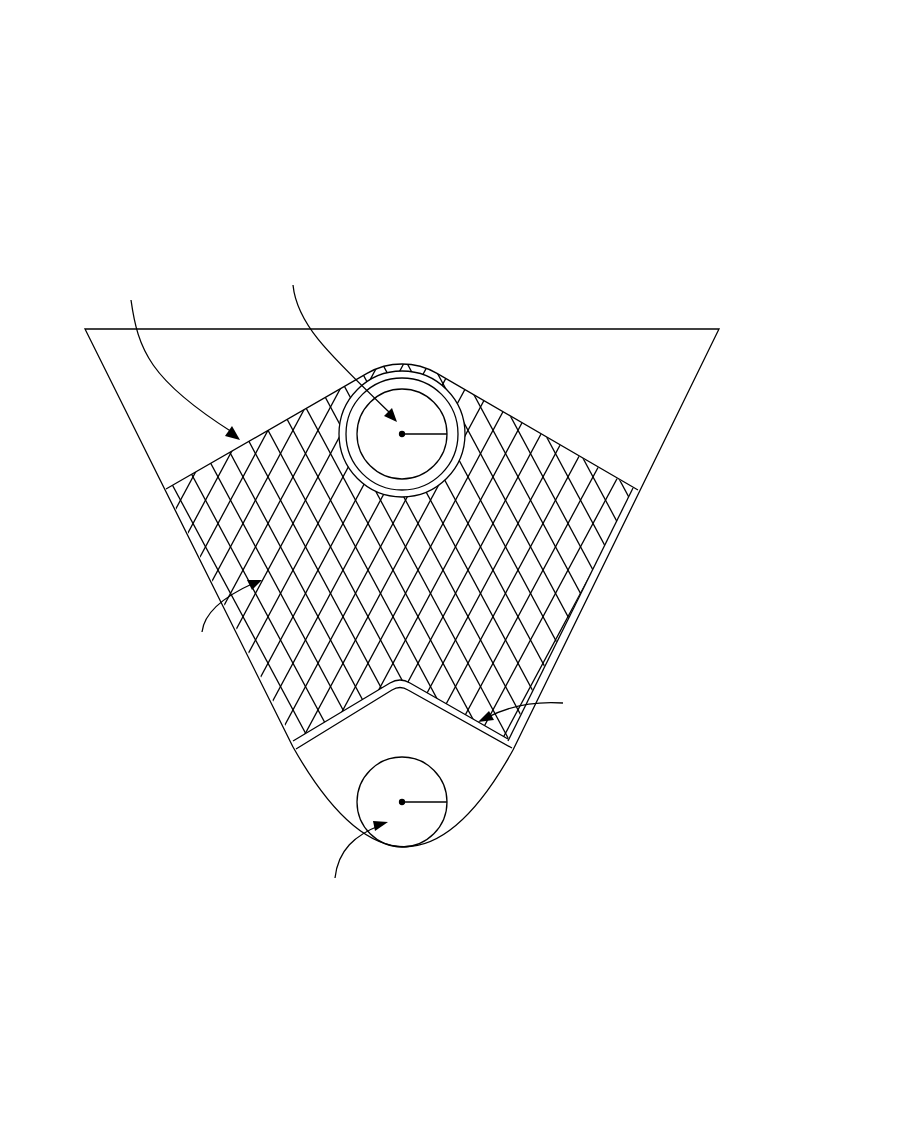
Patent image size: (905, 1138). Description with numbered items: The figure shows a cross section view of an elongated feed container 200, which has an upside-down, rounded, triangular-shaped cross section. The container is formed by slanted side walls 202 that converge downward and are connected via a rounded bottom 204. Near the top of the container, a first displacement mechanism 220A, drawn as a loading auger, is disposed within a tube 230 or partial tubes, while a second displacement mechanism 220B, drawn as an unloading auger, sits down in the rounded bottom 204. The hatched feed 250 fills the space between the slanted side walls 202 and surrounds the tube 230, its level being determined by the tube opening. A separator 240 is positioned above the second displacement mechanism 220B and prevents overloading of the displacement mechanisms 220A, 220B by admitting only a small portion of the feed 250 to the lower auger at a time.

The elongated feed container 200 is at (696, 94).
The slanted side walls 202 is at (521, 329).
The rounded bottom 204 is at (352, 822).
The first displacement mechanism 220A is at (406, 412).
The second displacement mechanism 220B is at (423, 822).
The tube 230 is at (466, 414).
The separator 240 is at (403, 692).
The feed 250 is at (372, 583).